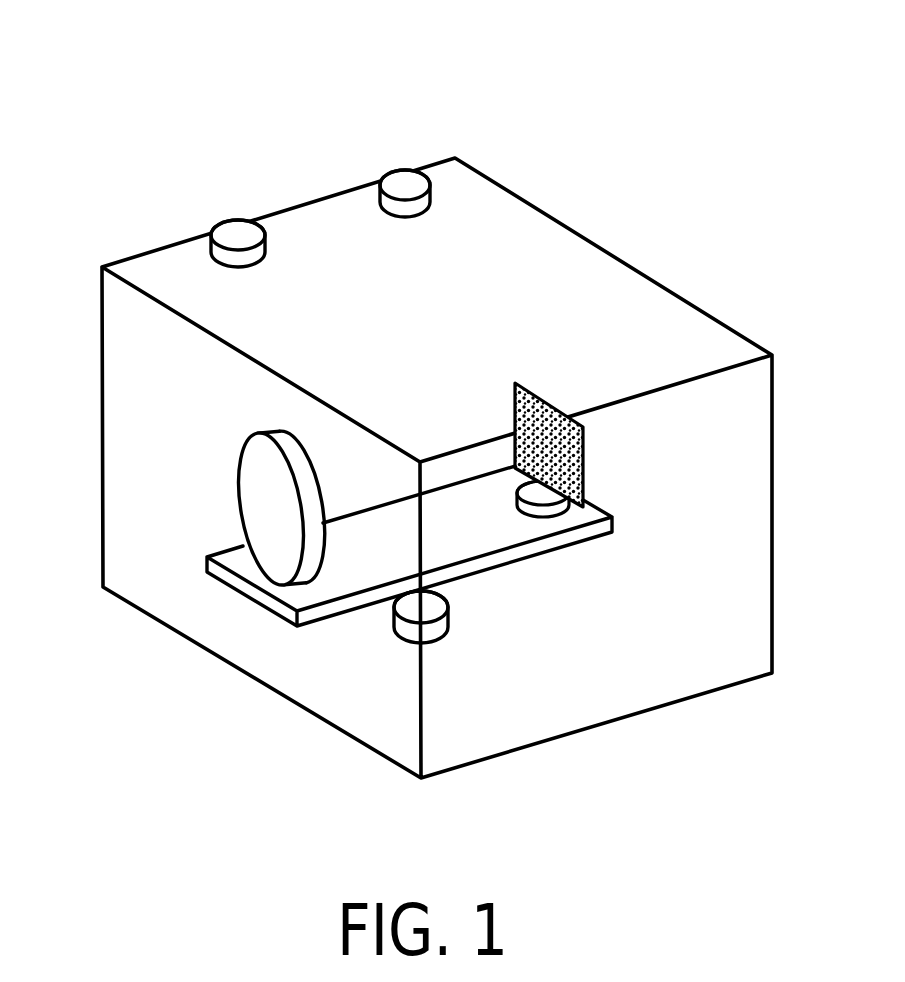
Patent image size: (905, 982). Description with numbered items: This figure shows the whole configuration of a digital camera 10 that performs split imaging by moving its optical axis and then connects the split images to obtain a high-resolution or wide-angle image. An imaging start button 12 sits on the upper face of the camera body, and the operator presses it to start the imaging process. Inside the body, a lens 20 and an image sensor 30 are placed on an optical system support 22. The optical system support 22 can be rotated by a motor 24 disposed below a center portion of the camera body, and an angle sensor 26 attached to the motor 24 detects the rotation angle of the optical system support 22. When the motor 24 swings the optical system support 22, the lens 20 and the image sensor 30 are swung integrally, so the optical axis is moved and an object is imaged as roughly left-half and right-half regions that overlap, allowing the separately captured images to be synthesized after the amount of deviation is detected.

The digital camera 10 is at (622, 147).
The imaging start button 12 is at (238, 228).
The lens 20 is at (239, 450).
The optical system support 22 is at (353, 602).
The motor 24 is at (508, 706).
The angle sensor 26 is at (433, 632).
The image sensor 30 is at (583, 450).